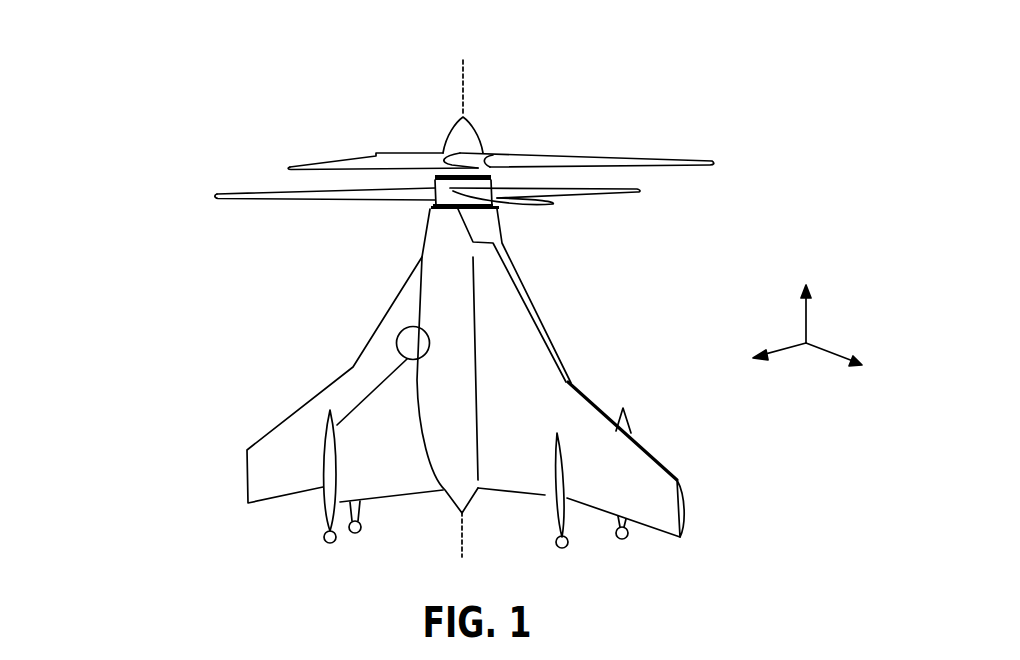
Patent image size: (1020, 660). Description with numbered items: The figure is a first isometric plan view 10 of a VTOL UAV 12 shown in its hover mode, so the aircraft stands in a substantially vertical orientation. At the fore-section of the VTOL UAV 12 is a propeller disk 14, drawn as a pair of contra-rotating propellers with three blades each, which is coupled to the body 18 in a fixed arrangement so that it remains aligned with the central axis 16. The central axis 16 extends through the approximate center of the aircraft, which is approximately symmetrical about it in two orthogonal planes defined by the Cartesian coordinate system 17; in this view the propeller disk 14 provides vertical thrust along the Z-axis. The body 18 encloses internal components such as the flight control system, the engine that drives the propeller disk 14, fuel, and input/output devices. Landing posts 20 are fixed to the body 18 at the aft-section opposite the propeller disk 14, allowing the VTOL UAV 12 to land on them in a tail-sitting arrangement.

The first isometric plan view 10 is at (130, 62).
The VTOL UAV 12 is at (250, 303).
The propeller disk 14 is at (337, 134).
The central axis 16 is at (463, 83).
The Cartesian coordinate system 17 is at (767, 303).
The body 18 is at (378, 332).
The landing posts 20 is at (325, 543).